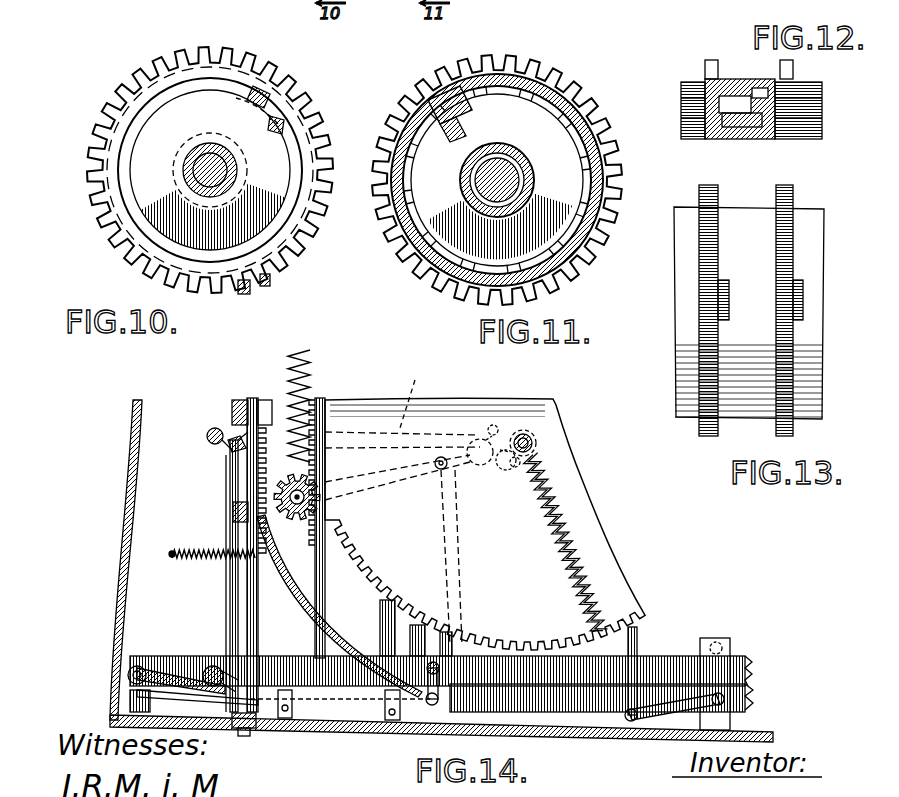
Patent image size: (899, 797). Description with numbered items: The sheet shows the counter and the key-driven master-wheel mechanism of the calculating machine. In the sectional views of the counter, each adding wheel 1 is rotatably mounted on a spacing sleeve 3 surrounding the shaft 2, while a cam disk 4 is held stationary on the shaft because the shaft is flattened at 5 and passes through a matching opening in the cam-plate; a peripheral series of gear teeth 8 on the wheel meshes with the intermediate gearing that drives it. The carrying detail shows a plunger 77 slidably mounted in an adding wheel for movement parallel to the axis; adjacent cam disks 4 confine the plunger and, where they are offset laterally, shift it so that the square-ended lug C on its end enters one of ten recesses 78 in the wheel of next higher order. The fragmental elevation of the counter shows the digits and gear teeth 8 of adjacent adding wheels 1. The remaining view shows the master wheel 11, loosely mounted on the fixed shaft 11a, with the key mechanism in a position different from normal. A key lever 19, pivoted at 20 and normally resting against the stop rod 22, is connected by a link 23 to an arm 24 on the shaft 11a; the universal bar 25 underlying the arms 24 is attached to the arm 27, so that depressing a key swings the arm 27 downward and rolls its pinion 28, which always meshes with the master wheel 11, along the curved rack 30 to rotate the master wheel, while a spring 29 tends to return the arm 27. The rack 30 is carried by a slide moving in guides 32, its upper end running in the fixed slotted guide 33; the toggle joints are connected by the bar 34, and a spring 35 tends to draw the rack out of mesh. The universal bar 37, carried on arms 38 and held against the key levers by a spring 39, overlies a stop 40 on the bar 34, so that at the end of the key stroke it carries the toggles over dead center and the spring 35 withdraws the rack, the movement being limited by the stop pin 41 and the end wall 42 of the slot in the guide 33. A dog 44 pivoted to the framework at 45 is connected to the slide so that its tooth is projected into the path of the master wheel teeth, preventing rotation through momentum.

In FIG. 10, the adding wheel 1 is at (210, 170).
In FIG. 11, the adding wheel 1 is at (522, 58).
In FIG. 12, the adding wheel 1 is at (747, 93).
In FIG. 10, the shaft 2 is at (200, 168).
In FIG. 11, the shaft 2 is at (518, 170).
In FIG. 10, the spacing sleeve 3 is at (208, 148).
In FIG. 11, the spacing sleeve 3 is at (497, 154).
In FIG. 10, the cam disk 4 is at (175, 110).
In FIG. 11, the cam disk 4 is at (598, 184).
In FIG. 10, the flattened portion of shaft 5 is at (245, 124).
In FIG. 10, the gear teeth 8 is at (250, 68).
In FIG. 11, the gear teeth 8 is at (448, 66).
In FIG. 13, the gear teeth 8 is at (709, 185).
In FIG. 12, the plunger 77 is at (743, 140).
In FIG. 11, the recess 78 is at (586, 112).
In FIG. 12, the lug C is at (683, 95).
In FIG. 14, the master gear wheel 11 is at (357, 398).
In FIG. 14, the fixed shaft 11a is at (530, 436).
In FIG. 14, the key lever 19 is at (748, 690).
In FIG. 14, the pivot 20 is at (128, 668).
In FIG. 14, the stop rod 22 is at (725, 645).
In FIG. 14, the link 23 is at (362, 620).
In FIG. 14, the arm 24 is at (415, 396).
In FIG. 14, the universal bar 25 is at (486, 468).
In FIG. 14, the arm 27 is at (380, 482).
In FIG. 14, the pinion 28 is at (298, 522).
In FIG. 14, the spring 29 is at (290, 370).
In FIG. 14, the rack 30 is at (262, 458).
In FIG. 14, the stationary bosses 32 is at (206, 436).
In FIG. 14, the fixed slotted guide 33 is at (262, 408).
In FIG. 14, the bar 34 is at (228, 586).
In FIG. 14, the spring 35 is at (200, 548).
In FIG. 14, the universal bar 37 is at (285, 720).
In FIG. 14, the arm 38 is at (200, 695).
In FIG. 14, the spring 39 is at (120, 662).
In FIG. 14, the stop 40 is at (248, 740).
In FIG. 14, the stop pin 41 is at (400, 722).
In FIG. 14, the end wall of slot 42 is at (238, 410).
In FIG. 14, the dog 44 is at (438, 655).
In FIG. 14, the pivot 45 is at (436, 676).